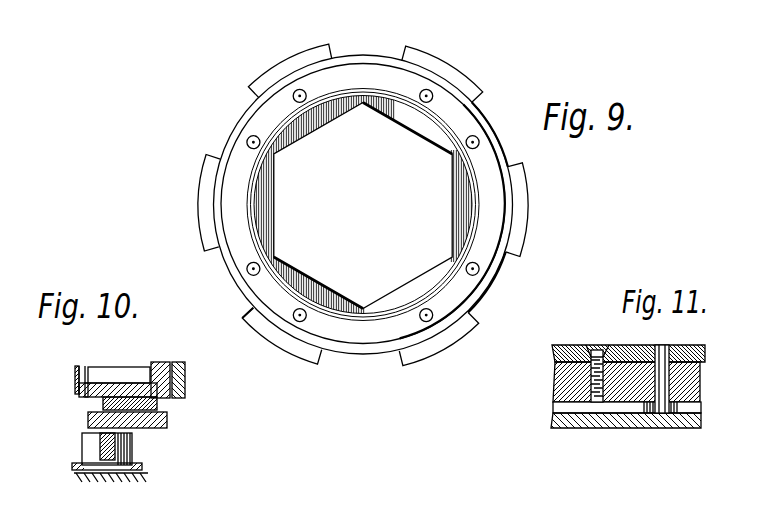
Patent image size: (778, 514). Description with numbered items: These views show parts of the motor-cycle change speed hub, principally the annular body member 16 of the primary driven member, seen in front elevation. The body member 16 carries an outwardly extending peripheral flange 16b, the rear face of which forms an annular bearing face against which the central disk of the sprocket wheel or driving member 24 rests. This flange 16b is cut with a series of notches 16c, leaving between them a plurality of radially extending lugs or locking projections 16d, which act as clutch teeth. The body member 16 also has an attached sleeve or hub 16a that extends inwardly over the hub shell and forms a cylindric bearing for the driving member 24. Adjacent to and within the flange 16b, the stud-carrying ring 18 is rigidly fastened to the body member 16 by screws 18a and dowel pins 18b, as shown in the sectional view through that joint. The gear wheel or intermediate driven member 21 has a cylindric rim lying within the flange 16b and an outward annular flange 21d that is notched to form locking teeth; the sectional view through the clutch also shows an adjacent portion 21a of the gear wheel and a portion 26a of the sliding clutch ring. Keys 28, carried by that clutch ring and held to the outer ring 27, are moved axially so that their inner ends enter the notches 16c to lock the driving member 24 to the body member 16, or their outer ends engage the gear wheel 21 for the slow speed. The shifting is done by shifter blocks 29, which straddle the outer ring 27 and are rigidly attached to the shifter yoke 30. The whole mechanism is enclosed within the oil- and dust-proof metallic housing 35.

In FIG. 9, the annular body member 16 is at (232, 200).
In FIG. 11, the annular body member 16 is at (690, 381).
In FIG. 9, the sleeve or hub of the body member 16a is at (253, 313).
In FIG. 9, the peripheral flange 16b is at (282, 83).
In FIG. 10, the peripheral flange 16b is at (183, 390).
In FIG. 9, the notches 16c is at (368, 54).
In FIG. 9, the lugs or locking projections 16d is at (447, 62).
In FIG. 10, the stud-carrying ring 18 is at (160, 365).
In FIG. 11, the stud-carrying ring 18 is at (704, 353).
In FIG. 11, the screws 18a is at (597, 346).
In FIG. 11, the dowel pins 18b is at (665, 346).
In FIG. 10, the gear wheel or intermediate driven member 21 is at (76, 393).
In FIG. 10, the clamp plate 21a is at (108, 375).
In FIG. 10, the annular flange of the gear wheel 21d is at (76, 371).
In FIG. 11, the sprocket wheel or driving member 24 is at (642, 420).
In FIG. 10, the insert 26a is at (160, 404).
In FIG. 10, the outer ring 27 is at (95, 446).
In FIG. 10, the keys 28 is at (166, 423).
In FIG. 10, the shifter blocks 29 is at (134, 448).
In FIG. 10, the shifter yoke 30 is at (143, 467).
In FIG. 10, the metallic housing 35 is at (122, 478).